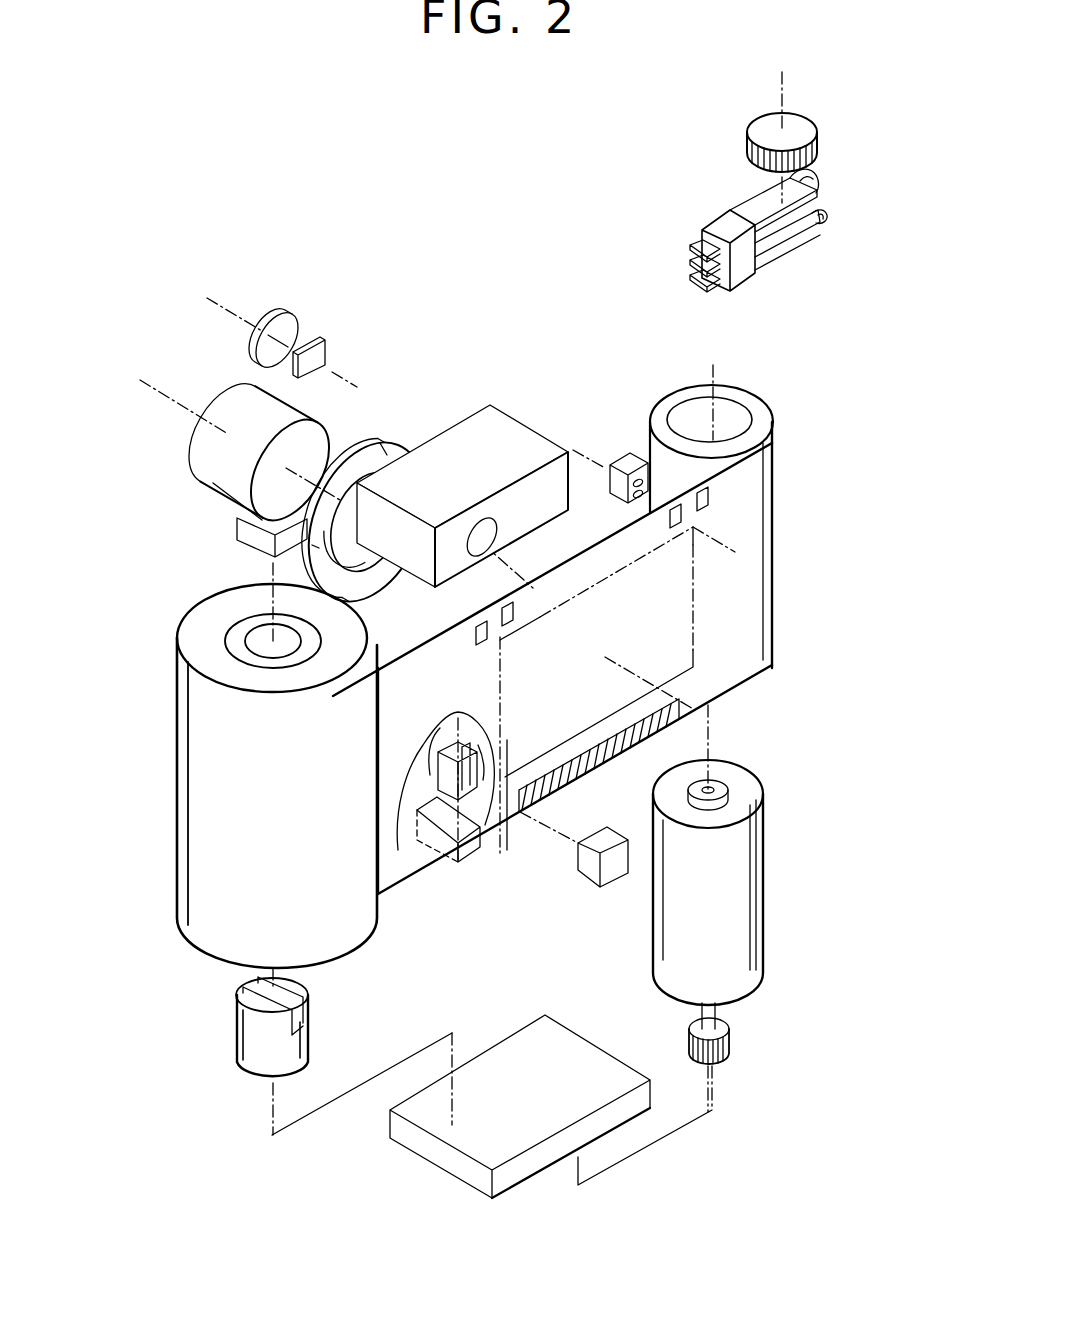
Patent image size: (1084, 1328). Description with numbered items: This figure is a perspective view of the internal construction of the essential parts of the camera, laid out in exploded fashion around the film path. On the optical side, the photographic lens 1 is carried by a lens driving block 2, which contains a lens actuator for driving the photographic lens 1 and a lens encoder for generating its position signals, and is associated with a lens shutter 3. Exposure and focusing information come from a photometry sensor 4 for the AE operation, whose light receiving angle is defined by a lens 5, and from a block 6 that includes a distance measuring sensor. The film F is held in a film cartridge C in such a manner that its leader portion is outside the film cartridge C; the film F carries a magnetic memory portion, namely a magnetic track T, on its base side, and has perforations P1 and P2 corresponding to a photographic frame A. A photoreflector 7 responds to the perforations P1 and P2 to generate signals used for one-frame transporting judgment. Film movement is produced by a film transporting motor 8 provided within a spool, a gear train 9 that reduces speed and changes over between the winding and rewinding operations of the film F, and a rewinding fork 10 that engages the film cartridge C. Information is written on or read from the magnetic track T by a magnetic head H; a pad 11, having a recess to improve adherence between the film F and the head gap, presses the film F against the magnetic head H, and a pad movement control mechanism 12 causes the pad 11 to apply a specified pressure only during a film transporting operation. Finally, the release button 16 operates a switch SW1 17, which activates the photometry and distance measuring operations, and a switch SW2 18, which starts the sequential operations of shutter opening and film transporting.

The photographic lens 1 is at (210, 457).
The lens driving block 2 is at (247, 542).
The lens shutter 3 is at (397, 441).
The photometry sensor 4 is at (320, 340).
The lens 5 is at (283, 312).
The block including a distance measuring sensor 6 is at (522, 417).
The photoreflector 7 is at (622, 457).
The film transporting motor 8 is at (765, 872).
The gear train 9 is at (388, 1130).
The rewinding fork 10 is at (237, 1027).
The pad 11 is at (402, 852).
The pad movement control mechanism 12 is at (470, 862).
The release button 16 is at (814, 120).
The switch SW1 17 is at (820, 184).
The switch SW2 18 is at (830, 221).
The film cartridge C is at (190, 775).
The film F is at (773, 550).
The photographic frame A is at (556, 748).
The magnetic track T is at (624, 748).
The magnetic head H is at (617, 882).
The perforation P1 is at (670, 524).
The perforation P2 is at (516, 610).